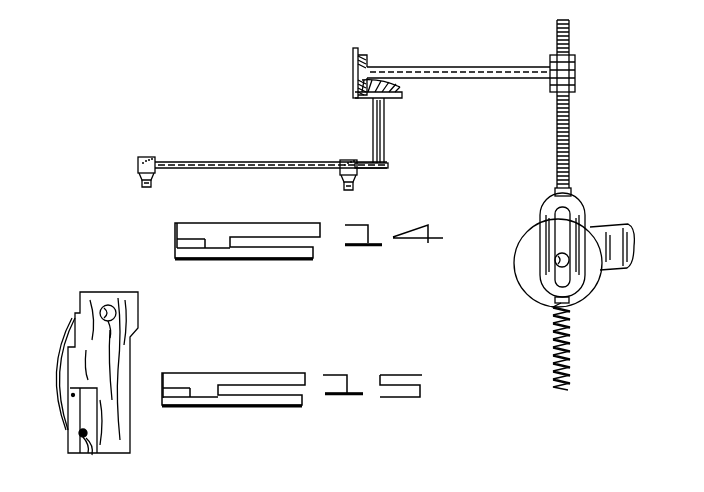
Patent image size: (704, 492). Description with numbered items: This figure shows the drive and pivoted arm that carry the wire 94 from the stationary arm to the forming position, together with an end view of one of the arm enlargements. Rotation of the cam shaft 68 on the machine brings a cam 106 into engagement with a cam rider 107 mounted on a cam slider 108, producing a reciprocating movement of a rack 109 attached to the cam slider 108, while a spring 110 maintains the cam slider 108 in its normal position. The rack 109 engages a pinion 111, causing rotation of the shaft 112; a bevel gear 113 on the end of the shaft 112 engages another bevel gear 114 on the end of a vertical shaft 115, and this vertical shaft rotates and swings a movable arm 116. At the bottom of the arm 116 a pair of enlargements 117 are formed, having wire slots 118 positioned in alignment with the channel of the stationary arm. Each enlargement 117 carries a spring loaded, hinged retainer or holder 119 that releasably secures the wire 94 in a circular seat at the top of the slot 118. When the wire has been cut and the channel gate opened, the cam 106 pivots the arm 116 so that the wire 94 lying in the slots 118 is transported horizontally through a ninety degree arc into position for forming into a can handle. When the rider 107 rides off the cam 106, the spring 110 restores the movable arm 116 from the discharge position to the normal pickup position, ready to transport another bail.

In FIG. 14, the cam shaft 68 is at (555, 258).
In FIG. 15, the wire 94 is at (90, 440).
In FIG. 14, the cam 106 is at (630, 235).
In FIG. 14, the cam rider 107 is at (568, 200).
In FIG. 14, the cam slider 108 is at (582, 207).
In FIG. 14, the rack 109 is at (572, 46).
In FIG. 14, the spring 110 is at (570, 360).
In FIG. 14, the pinion 111 is at (575, 75).
In FIG. 14, the shaft 112 is at (418, 68).
In FIG. 14, the bevel gear 113 is at (363, 57).
In FIG. 14, the bevel gear 114 is at (398, 92).
In FIG. 14, the vertical shaft 115 is at (385, 138).
In FIG. 14, the movable arm 116 is at (262, 162).
In FIG. 15, the movable arm 116 is at (101, 312).
In FIG. 14, the enlargements 117 is at (145, 157).
In FIG. 15, the enlargements 117 is at (127, 312).
In FIG. 14, the wire slots 118 is at (155, 182).
In FIG. 15, the wire slots 118 is at (87, 453).
In FIG. 15, the hinged retainer 119 is at (73, 438).